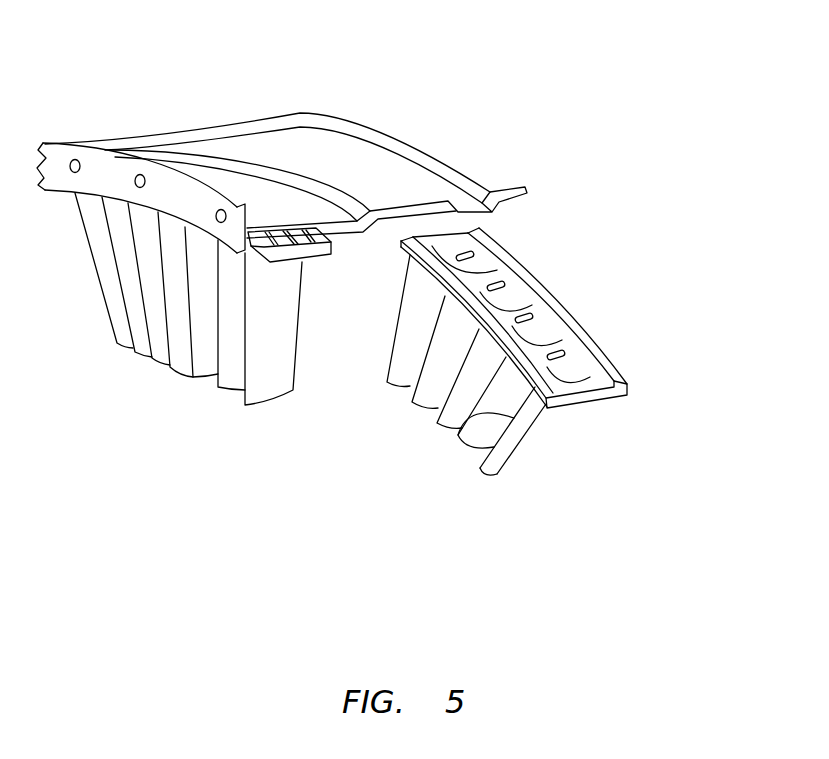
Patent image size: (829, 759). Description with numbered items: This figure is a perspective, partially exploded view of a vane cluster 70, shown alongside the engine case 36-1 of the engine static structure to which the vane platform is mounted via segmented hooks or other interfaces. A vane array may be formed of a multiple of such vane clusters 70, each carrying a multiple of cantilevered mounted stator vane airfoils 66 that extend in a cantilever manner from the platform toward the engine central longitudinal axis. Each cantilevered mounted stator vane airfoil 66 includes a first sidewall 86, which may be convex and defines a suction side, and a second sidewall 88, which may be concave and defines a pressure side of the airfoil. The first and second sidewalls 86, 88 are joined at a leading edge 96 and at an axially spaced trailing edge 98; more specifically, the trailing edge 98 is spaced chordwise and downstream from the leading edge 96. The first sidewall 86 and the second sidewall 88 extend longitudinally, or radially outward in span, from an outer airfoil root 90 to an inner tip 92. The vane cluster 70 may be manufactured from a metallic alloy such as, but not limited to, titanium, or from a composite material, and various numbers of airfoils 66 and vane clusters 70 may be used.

The engine case 36-1 is at (297, 150).
The vane cluster 70 is at (572, 395).
The cantilevered mounted stator vane airfoil 66 is at (489, 474).
The first sidewall 86 is at (538, 436).
The second sidewall 88 is at (458, 433).
The airfoil root 90 is at (568, 378).
The tip 92 is at (497, 477).
The leading edge 96 is at (480, 463).
The trailing edge 98 is at (598, 416).